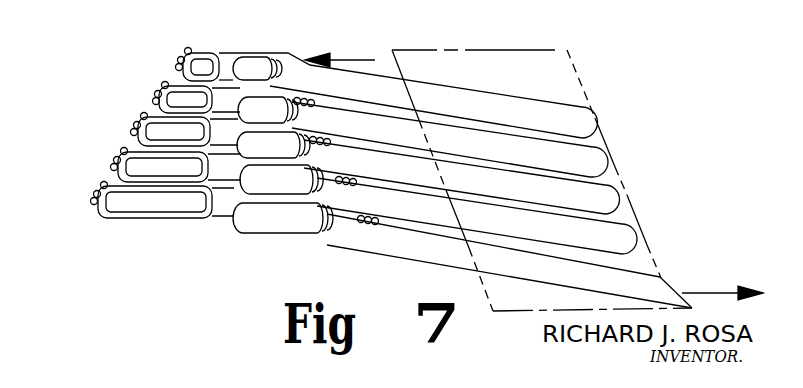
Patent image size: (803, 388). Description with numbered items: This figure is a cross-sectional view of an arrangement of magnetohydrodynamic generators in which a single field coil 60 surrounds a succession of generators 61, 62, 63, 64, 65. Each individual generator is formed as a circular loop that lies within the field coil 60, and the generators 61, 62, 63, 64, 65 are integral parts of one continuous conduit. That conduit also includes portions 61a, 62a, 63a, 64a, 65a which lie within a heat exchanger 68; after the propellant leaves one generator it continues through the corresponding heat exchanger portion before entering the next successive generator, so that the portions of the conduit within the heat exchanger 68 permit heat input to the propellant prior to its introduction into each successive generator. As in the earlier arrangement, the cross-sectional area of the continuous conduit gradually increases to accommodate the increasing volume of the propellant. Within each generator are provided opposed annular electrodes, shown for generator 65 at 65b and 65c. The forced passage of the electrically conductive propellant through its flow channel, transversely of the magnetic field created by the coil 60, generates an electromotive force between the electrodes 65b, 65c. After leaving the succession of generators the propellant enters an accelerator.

The field coil 60 is at (122, 157).
The generator 61 is at (229, 62).
The generator 62 is at (236, 113).
The generator 63 is at (237, 148).
The generator 64 is at (236, 188).
The generator 65 is at (235, 222).
The heat exchanger portion 61a is at (598, 124).
The heat exchanger portion 62a is at (610, 160).
The heat exchanger portion 63a is at (620, 196).
The heat exchanger portion 64a is at (639, 234).
The heat exchanger portion 65a is at (568, 283).
The annular electrode 65b is at (126, 215).
The annular electrode 65c is at (189, 218).
The heat exchanger 68 is at (458, 50).